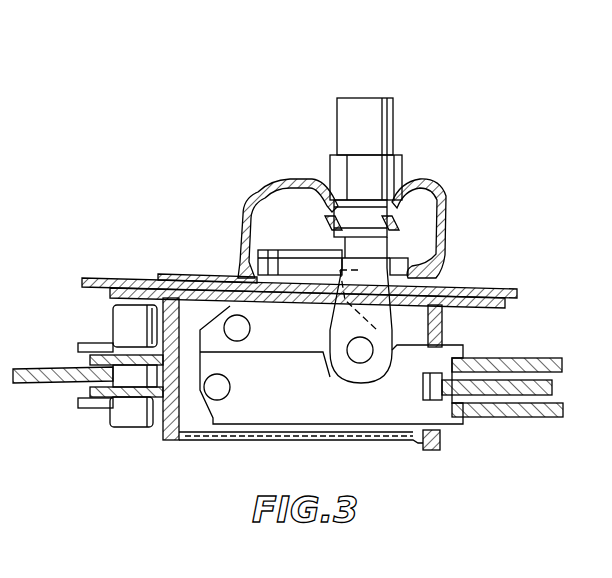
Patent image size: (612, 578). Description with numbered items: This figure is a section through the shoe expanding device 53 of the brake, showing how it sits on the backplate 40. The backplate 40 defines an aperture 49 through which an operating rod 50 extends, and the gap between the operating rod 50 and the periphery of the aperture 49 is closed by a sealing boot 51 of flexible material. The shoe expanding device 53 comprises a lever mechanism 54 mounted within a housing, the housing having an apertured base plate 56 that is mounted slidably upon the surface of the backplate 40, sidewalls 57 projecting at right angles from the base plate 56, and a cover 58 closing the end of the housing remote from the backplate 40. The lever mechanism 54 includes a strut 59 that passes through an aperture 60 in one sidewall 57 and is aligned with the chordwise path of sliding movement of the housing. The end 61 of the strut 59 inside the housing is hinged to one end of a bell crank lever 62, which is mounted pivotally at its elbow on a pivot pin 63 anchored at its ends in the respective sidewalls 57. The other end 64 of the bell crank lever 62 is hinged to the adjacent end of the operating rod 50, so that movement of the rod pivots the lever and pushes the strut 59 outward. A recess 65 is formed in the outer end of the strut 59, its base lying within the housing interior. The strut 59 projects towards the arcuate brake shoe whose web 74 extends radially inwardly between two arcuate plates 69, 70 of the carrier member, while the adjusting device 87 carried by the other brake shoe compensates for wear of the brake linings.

The backplate 40 is at (118, 282).
The aperture 49 is at (190, 278).
The operating rod 50 is at (370, 123).
The sealing boot 51 is at (250, 206).
The shoe expanding device 53 is at (445, 277).
The lever mechanism 54 is at (290, 413).
The base plate 56 is at (128, 296).
The sidewalls 57 is at (170, 328).
The cover 58 is at (320, 440).
The strut 59 is at (440, 355).
The aperture 60 is at (430, 337).
The end of the strut 61 is at (228, 392).
The bell crank lever 62 is at (263, 317).
The pivot pin 63 is at (250, 333).
The other end of the bell crank lever 64 is at (363, 363).
The recess 65 is at (427, 397).
The arcuate plate 69 is at (507, 363).
The arcuate plate 70 is at (500, 413).
The web 74 is at (537, 413).
The adjusting device 87 is at (127, 373).